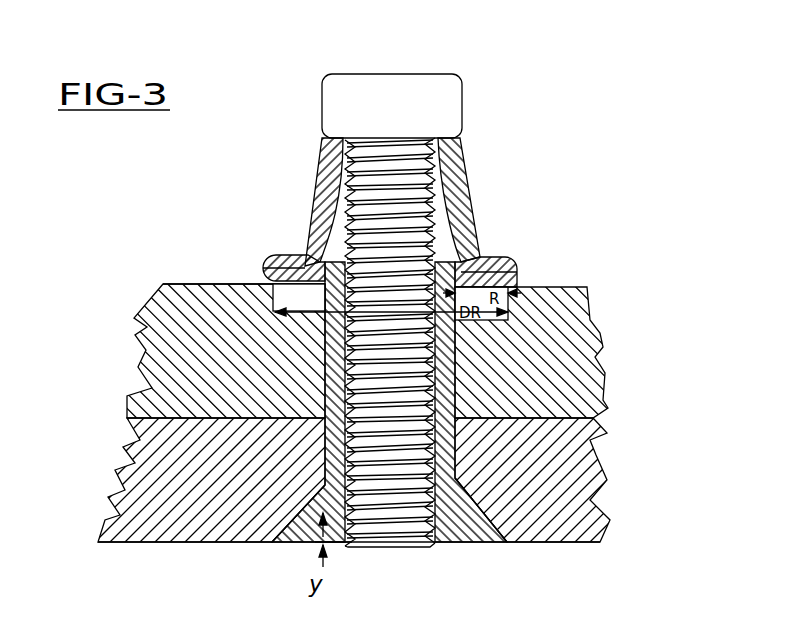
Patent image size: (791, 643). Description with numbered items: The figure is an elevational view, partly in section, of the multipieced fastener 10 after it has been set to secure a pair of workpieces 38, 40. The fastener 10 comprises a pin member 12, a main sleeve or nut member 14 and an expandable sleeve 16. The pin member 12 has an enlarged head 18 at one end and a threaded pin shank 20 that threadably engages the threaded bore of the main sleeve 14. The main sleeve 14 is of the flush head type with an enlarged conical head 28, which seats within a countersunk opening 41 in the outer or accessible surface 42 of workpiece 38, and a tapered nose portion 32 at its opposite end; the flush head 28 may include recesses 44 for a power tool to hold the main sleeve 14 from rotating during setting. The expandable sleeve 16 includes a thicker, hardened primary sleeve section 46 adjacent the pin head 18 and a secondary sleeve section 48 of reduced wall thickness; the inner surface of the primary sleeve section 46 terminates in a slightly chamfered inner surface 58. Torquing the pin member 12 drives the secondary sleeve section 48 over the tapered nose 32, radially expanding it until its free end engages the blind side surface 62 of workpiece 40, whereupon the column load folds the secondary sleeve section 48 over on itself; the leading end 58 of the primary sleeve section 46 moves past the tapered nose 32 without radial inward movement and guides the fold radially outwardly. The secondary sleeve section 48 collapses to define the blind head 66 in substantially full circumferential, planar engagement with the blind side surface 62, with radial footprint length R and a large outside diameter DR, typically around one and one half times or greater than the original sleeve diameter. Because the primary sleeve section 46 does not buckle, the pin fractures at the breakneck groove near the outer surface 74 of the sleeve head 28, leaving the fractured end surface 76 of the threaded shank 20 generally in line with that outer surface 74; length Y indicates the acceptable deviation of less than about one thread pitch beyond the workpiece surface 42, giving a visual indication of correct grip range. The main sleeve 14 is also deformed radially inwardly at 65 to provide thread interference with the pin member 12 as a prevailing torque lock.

The multipieced fastener 10 is at (483, 86).
The pin member 12 is at (442, 165).
The main sleeve or nut member 14 is at (458, 418).
The expandable sleeve 16 is at (467, 203).
The enlarged head 18 is at (408, 112).
The threaded pin shank 20 is at (385, 180).
The enlarged conical head 28 is at (473, 513).
The tapered nose portion 32 is at (470, 236).
The workpiece 38 is at (250, 483).
The workpiece 40 is at (263, 348).
The countersunk opening 41 is at (292, 512).
The outer or accessible surface 42 is at (247, 542).
The recesses 44 is at (455, 532).
The primary sleeve section 46 is at (347, 177).
The secondary sleeve section 48 is at (288, 257).
The chamfered inner surface 58 is at (300, 257).
The blind side surface 62 is at (218, 283).
The radially inward deformation 65 is at (330, 312).
The blind head 66 is at (265, 258).
The outer surface 74 is at (504, 530).
The fractured end surface 76 is at (400, 550).